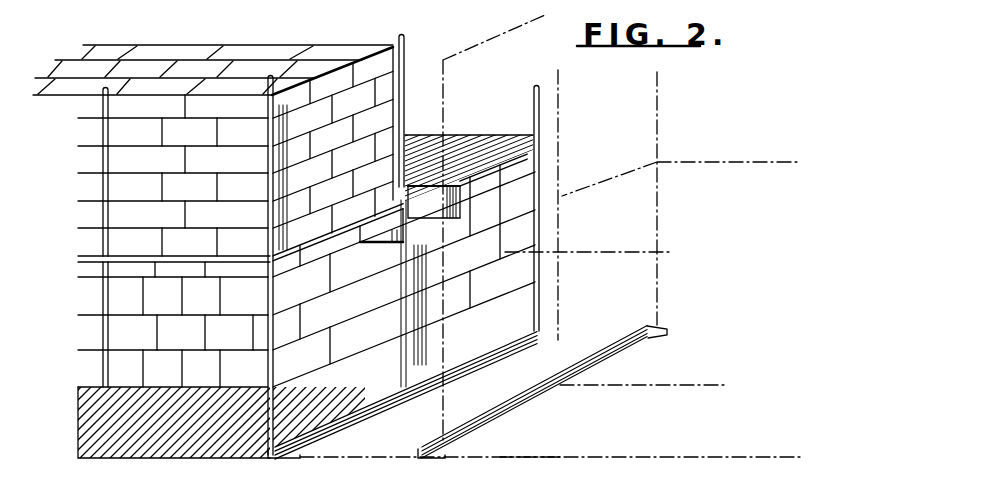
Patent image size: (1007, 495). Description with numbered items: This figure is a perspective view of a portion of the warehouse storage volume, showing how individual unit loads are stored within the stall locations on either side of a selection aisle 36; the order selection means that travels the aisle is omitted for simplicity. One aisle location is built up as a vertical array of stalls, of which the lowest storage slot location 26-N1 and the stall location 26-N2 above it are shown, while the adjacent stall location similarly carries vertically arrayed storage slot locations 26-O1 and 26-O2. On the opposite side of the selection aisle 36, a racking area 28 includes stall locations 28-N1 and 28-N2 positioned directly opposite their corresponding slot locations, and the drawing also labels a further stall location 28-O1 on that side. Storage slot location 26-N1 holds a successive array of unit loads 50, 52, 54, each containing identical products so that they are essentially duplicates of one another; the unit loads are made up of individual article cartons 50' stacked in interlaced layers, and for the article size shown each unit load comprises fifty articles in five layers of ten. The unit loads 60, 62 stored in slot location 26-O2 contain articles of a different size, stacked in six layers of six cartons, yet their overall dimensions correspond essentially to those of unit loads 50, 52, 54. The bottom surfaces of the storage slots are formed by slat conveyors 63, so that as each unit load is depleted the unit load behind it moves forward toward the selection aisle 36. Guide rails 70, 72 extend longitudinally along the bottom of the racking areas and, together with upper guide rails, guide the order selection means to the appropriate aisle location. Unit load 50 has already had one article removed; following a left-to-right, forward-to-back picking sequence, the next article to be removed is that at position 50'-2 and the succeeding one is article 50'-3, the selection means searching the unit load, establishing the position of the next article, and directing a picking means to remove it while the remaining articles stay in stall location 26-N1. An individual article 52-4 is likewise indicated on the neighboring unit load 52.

The storage slot location 26-O2 is at (345, 42).
The stall location 26-N2 is at (461, 112).
The storage slot location 26-O1 is at (290, 419).
The storage slot location 26-N1 is at (515, 237).
The stall location 28-N2 is at (663, 192).
The stall location 28-N1 is at (745, 369).
The first outer rail reference plane 28-O1 is at (705, 424).
The racking area 28 is at (522, 461).
The slat conveyor 63 is at (423, 150).
The unit load 60 is at (163, 172).
The unit load 62 is at (97, 172).
The unit load 54 is at (98, 309).
The unit load 52 is at (177, 309).
The bond beam / floor ledge 52-4 is at (332, 237).
The unit load 50 is at (338, 295).
The article carton 50' is at (508, 243).
The article 50'-2 is at (465, 161).
The article 50'-3 is at (547, 189).
The selection aisle 36 is at (523, 388).
The guide rail 70 is at (333, 438).
The guide rail 72 is at (438, 442).